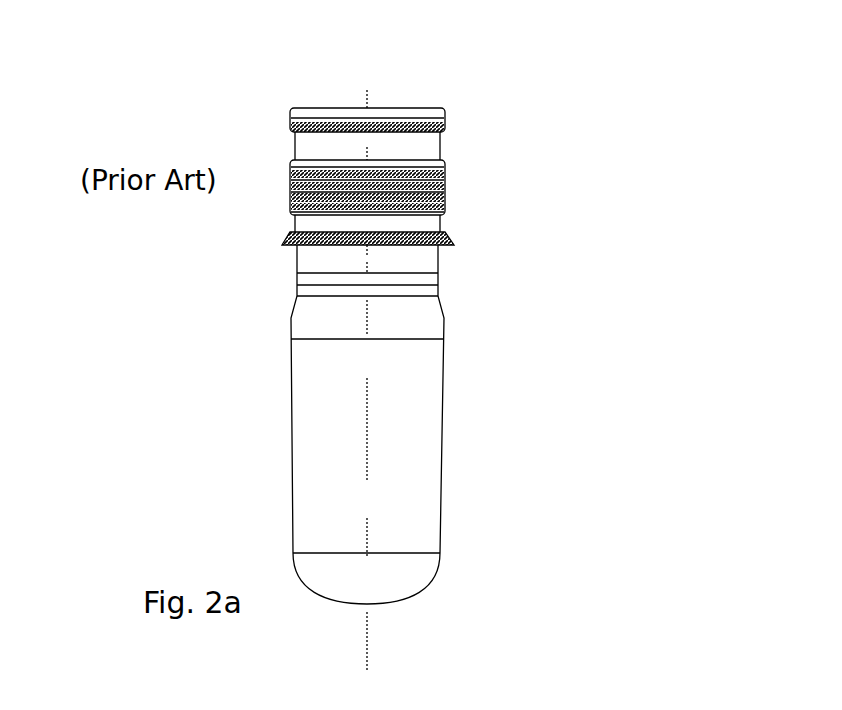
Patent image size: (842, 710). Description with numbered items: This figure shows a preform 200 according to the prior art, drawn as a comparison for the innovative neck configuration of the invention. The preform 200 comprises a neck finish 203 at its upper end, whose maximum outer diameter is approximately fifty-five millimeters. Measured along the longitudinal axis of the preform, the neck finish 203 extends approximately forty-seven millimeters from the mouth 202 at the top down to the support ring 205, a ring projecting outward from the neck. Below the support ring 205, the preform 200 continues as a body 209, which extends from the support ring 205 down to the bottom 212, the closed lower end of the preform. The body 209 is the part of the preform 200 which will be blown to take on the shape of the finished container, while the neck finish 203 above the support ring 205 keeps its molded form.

The preform 200 is at (405, 353).
The mouth 202 is at (388, 108).
The neck finish 203 is at (445, 183).
The support ring 205 is at (450, 238).
The body 209 is at (339, 461).
The bottom 212 is at (375, 604).